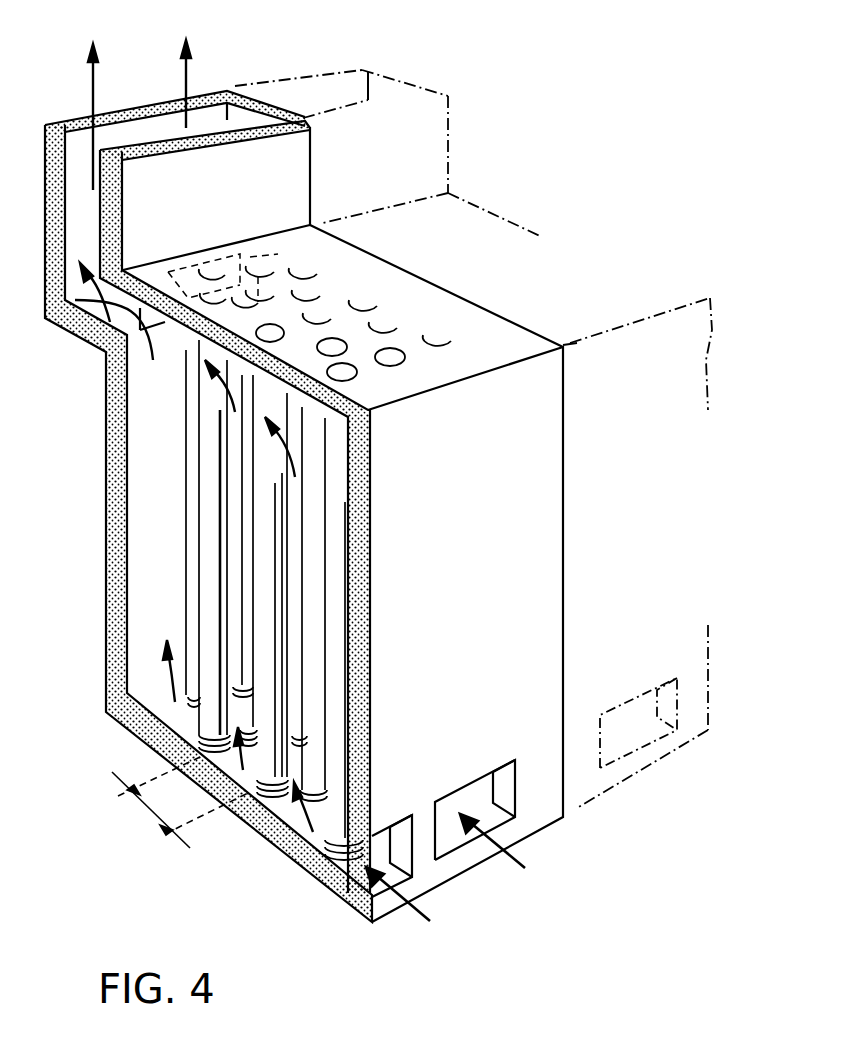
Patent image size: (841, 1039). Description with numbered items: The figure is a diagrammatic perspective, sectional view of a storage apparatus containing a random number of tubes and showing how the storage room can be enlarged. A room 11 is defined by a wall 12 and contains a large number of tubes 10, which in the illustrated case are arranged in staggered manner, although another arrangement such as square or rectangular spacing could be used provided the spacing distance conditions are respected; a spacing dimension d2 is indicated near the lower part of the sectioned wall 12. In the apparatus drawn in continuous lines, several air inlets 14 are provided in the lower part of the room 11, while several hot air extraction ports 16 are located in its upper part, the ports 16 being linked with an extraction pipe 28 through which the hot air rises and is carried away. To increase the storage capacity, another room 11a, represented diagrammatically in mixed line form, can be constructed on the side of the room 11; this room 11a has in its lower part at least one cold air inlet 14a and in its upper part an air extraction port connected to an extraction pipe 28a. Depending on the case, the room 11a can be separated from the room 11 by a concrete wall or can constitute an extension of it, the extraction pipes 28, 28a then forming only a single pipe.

The tubes 10 is at (207, 475).
The room 11 is at (147, 555).
The another room 11a is at (672, 328).
The wall 12 is at (110, 632).
The air inlets 14 is at (392, 868).
The cold air inlet 14a is at (635, 733).
The hot air extraction ports 16 is at (92, 325).
The extraction pipe 28 is at (77, 188).
The extraction pipe 28a is at (362, 98).
The wall thickness dimension d2 is at (181, 802).